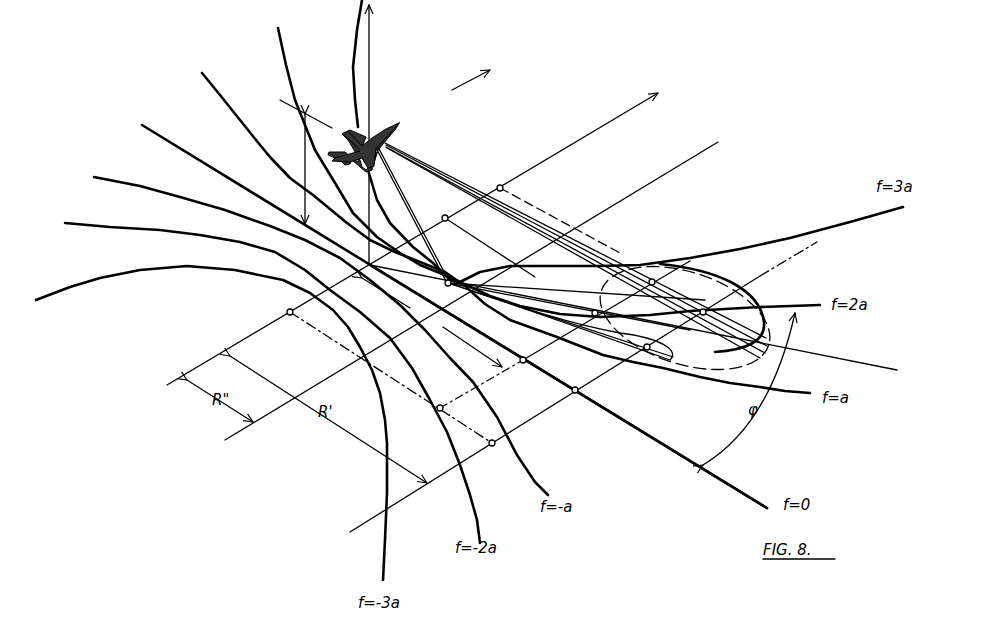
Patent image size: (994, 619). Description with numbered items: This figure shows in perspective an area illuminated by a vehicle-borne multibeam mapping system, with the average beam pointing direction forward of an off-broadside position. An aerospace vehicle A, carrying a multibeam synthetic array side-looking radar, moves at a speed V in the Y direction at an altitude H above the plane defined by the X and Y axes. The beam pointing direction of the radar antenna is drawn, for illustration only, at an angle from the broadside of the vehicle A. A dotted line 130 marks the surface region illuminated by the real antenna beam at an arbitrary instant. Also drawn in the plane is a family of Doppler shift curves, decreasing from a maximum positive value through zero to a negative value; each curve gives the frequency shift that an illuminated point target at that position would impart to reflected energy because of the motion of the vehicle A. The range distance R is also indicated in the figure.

The dotted line 130 is at (735, 300).
The aerospace vehicle A is at (383, 127).
The altitude H is at (306, 162).
The speed V is at (460, 89).
The ground range R is at (432, 322).
The X direction X is at (568, 399).
The Y direction Y is at (421, 229).